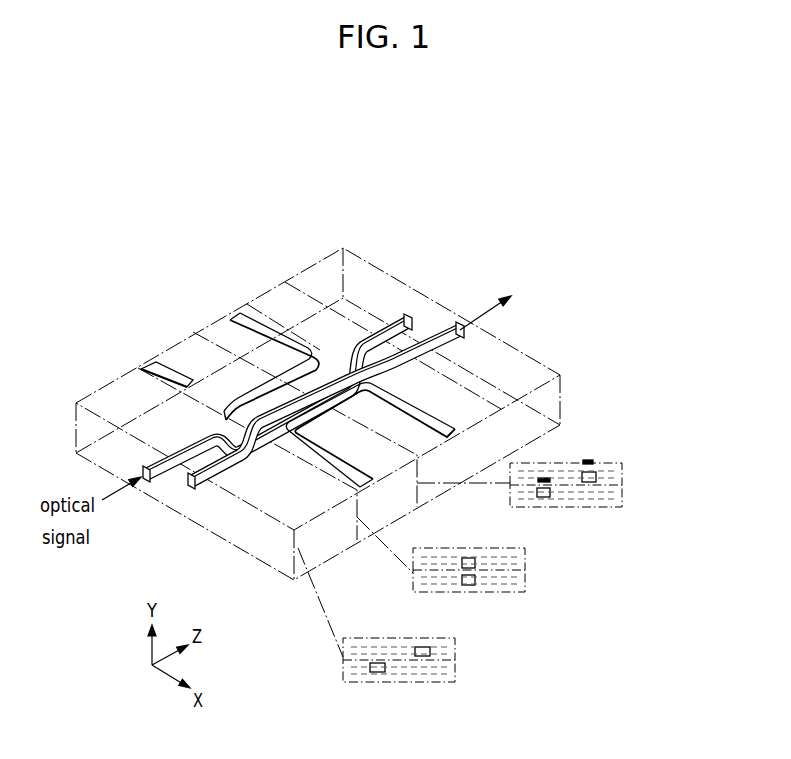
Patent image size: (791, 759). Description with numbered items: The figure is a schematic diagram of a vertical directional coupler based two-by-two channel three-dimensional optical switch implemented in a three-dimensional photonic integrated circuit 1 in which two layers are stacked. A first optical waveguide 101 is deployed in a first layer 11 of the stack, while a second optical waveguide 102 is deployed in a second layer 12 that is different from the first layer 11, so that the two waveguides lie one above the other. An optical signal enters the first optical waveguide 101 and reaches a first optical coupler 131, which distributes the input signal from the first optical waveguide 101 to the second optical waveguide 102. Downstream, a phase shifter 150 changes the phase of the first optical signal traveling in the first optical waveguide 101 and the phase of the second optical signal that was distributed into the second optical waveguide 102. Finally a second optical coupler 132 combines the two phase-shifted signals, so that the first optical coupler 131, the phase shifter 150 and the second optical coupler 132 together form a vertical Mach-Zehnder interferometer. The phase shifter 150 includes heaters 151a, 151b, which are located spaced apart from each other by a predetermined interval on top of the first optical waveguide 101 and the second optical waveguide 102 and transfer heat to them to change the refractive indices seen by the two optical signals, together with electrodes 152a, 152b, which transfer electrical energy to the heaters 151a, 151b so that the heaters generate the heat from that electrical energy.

The 3D photonic integrated circuit 1 is at (392, 277).
The first layer 11 is at (640, 494).
The second layer 12 is at (640, 472).
The first optical waveguide 101 is at (141, 470).
The second optical waveguide 102 is at (205, 486).
The first optical coupler 131 is at (228, 414).
The second optical coupler 132 is at (343, 338).
The phase shifter 150 is at (291, 371).
The heater 151a is at (262, 400).
The heater 151b is at (588, 459).
The electrode 152a is at (232, 318).
The electrode 152b is at (440, 416).